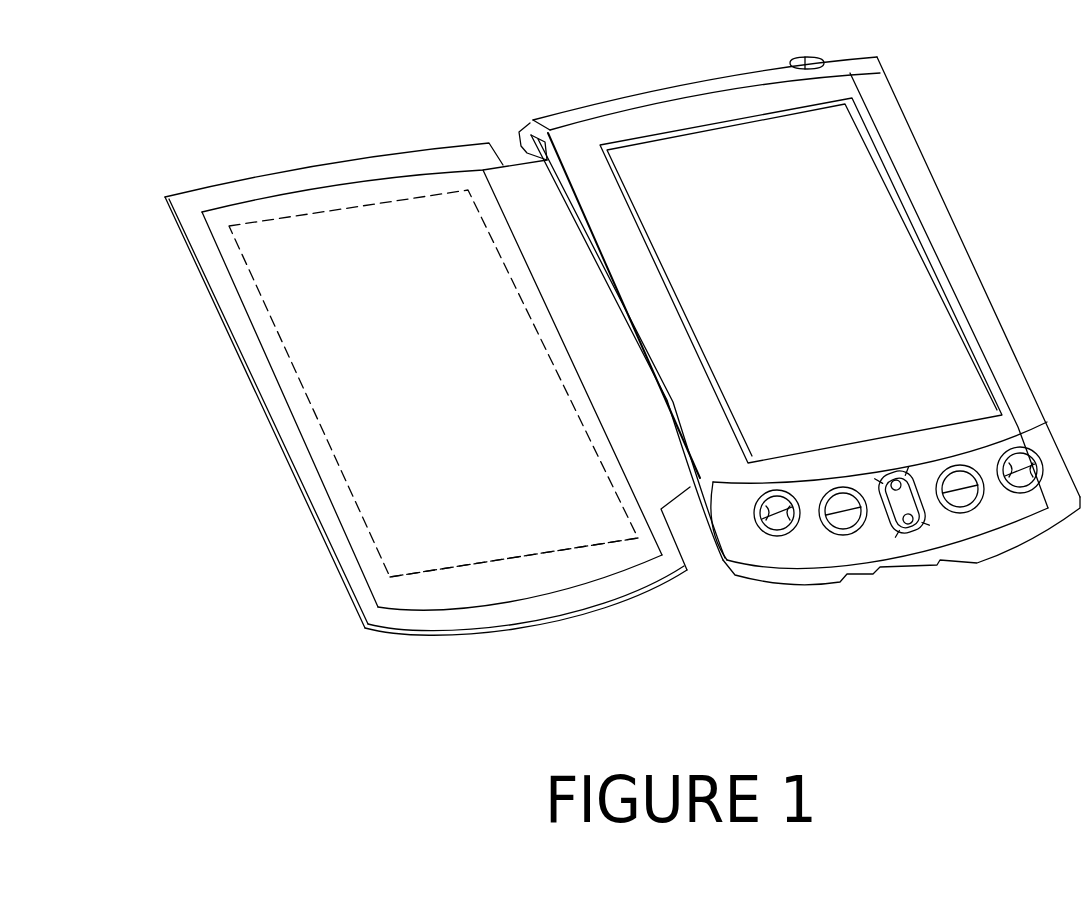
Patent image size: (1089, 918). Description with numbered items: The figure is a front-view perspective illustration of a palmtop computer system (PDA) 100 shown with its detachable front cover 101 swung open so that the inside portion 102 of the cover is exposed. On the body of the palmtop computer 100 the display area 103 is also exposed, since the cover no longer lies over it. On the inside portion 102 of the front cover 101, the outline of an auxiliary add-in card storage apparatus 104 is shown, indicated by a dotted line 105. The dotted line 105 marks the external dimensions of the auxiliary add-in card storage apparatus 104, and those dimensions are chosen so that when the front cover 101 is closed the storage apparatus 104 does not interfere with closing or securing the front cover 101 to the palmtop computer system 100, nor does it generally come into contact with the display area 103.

The palmtop computer system 100 is at (890, 117).
The detachable front cover 101 is at (263, 413).
The inside portion 102 is at (325, 180).
The display area 103 is at (927, 337).
The auxiliary add-in card storage apparatus 104 is at (397, 505).
The dotted line 105 is at (495, 562).